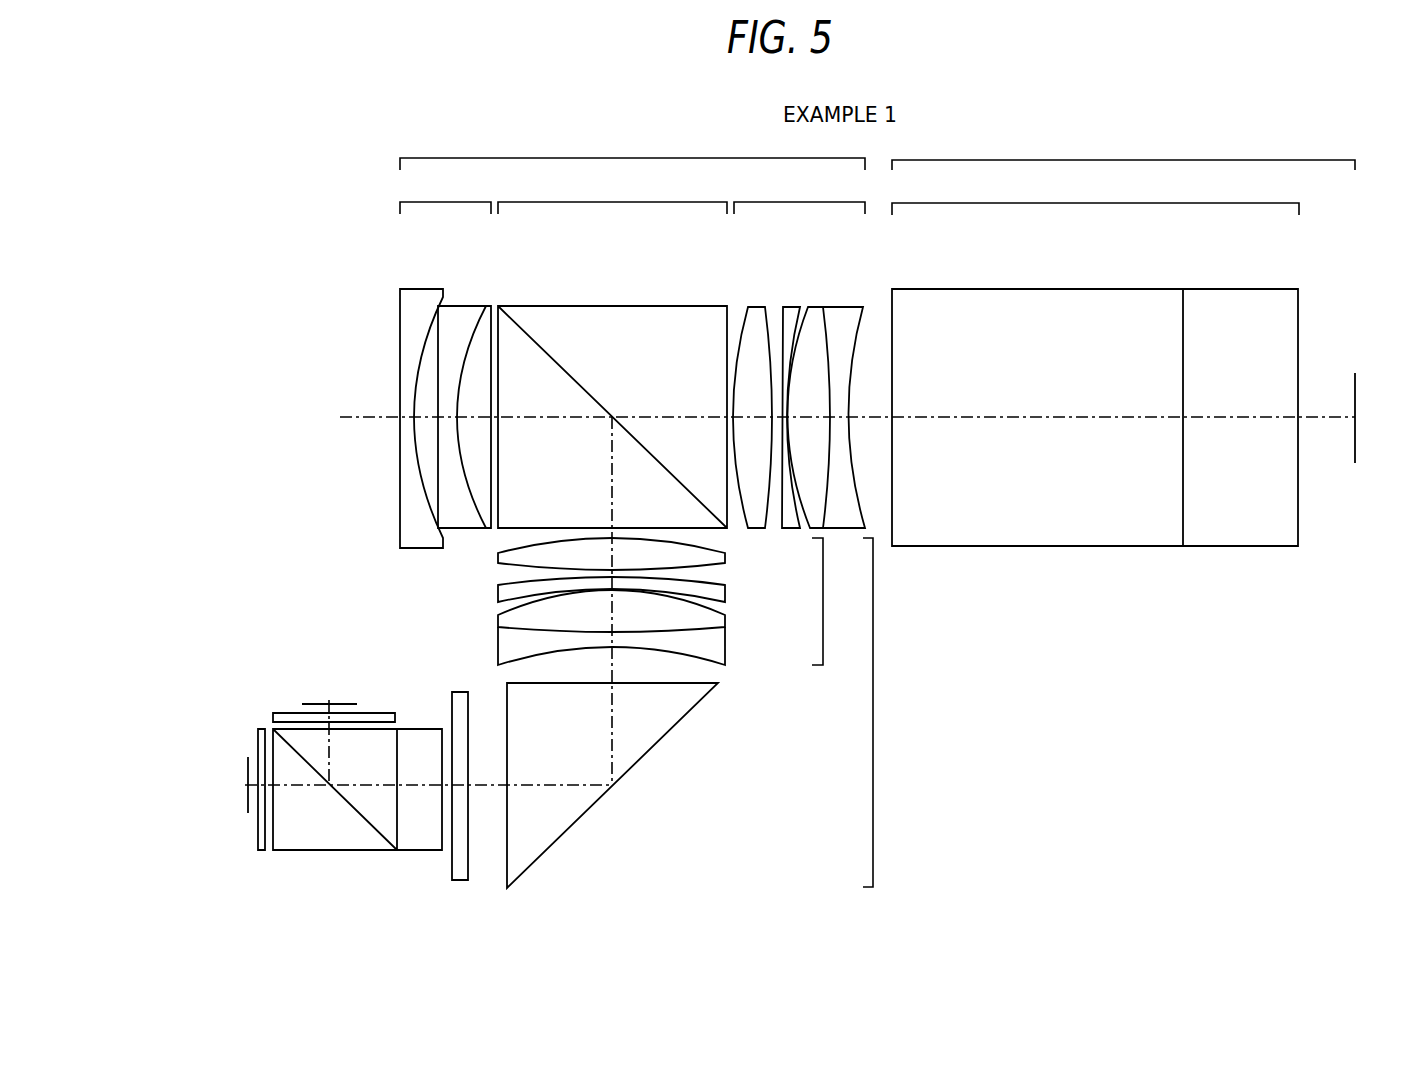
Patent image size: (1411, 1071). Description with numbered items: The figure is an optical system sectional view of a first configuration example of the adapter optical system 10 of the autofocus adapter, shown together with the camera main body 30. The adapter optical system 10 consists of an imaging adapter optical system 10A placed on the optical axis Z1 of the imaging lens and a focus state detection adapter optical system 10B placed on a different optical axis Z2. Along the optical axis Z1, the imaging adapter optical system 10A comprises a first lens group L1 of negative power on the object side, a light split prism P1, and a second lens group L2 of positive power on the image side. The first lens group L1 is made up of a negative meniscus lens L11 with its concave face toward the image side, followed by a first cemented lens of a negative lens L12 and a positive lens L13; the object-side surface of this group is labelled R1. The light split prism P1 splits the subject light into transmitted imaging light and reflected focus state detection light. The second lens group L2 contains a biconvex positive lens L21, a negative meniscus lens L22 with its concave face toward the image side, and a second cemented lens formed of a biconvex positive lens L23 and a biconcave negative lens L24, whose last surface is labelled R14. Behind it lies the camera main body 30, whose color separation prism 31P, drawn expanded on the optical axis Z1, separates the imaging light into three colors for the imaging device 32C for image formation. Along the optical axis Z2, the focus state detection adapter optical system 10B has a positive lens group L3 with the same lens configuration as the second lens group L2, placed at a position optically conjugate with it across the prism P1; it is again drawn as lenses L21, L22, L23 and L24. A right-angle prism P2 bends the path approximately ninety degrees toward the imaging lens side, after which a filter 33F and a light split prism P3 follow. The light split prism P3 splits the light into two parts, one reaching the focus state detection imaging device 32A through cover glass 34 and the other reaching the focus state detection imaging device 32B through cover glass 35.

The adapter optical system 10 is at (338, 233).
The imaging adapter optical system 10A is at (632, 151).
The focus state detection adapter optical system 10B is at (890, 712).
The camera main body 30 is at (1123, 151).
The color separation prism 31P is at (1095, 359).
The focus state detection imaging device 32A is at (245, 800).
The focus state detection imaging device 32B is at (398, 680).
The imaging device for image formation 32C is at (1355, 372).
The filter 33F is at (462, 700).
The cover glass 34 is at (262, 851).
The cover glass 35 is at (396, 718).
The first lens group L1 is at (445, 193).
The negative lens L11 is at (422, 301).
The negative lens L12 is at (458, 320).
The positive lens L13 is at (484, 322).
The light split prism P1 is at (612, 352).
The second lens group L2 is at (799, 195).
The biconvex positive lens L21 is at (755, 318).
The negative lens L22 is at (791, 317).
The biconvex positive lens L23 is at (817, 317).
The biconcave negative lens L24 is at (847, 317).
The positive lens group L3 is at (832, 601).
The right-angle prism P2 is at (641, 758).
The light split prism P3 is at (334, 838).
The optical axis Z1 is at (352, 426).
The optical axis Z2 is at (610, 475).
The first surface R1 is at (397, 478).
The last surface R14 is at (853, 498).